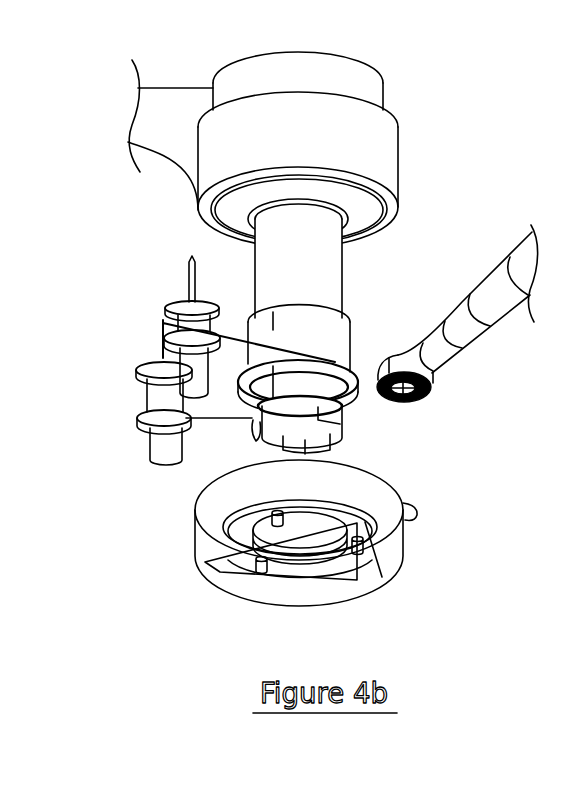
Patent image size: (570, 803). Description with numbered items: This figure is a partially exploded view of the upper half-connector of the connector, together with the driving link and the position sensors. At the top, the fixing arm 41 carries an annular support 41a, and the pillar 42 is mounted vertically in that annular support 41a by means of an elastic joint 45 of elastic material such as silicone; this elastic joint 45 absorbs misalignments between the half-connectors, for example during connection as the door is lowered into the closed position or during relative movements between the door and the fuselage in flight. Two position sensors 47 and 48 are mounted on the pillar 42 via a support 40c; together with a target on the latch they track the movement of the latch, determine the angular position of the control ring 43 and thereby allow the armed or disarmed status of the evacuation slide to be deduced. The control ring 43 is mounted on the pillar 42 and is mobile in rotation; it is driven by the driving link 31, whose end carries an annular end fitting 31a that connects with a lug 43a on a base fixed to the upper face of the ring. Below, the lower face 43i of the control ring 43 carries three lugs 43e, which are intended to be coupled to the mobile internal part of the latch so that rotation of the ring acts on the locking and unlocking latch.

The fixing arm 41 is at (145, 107).
The annular support 41a is at (390, 161).
The elastic joint 45 is at (228, 203).
The pillar 42 is at (338, 292).
The support 40c is at (218, 403).
The position sensor 47 is at (170, 310).
The position sensor 48 is at (140, 373).
The driving link 31 is at (486, 288).
The annular end fitting 31a is at (408, 399).
The control ring 43 is at (399, 481).
The lug 43a is at (410, 510).
The lower face 43i is at (210, 565).
The lugs 43e is at (279, 524).